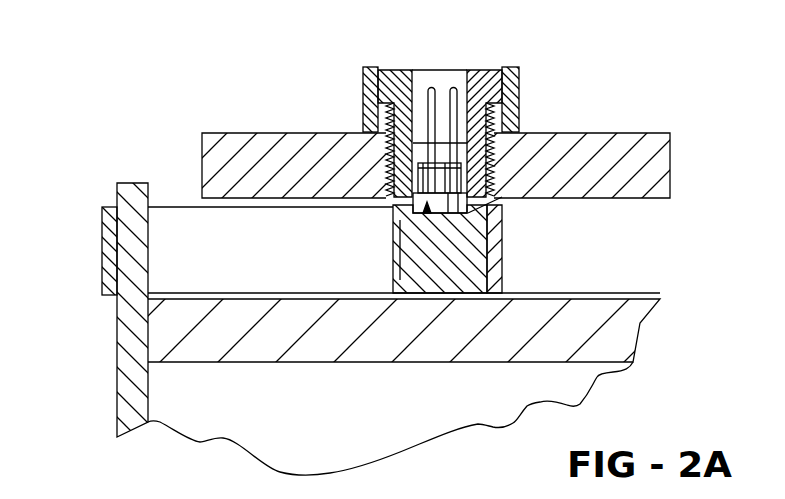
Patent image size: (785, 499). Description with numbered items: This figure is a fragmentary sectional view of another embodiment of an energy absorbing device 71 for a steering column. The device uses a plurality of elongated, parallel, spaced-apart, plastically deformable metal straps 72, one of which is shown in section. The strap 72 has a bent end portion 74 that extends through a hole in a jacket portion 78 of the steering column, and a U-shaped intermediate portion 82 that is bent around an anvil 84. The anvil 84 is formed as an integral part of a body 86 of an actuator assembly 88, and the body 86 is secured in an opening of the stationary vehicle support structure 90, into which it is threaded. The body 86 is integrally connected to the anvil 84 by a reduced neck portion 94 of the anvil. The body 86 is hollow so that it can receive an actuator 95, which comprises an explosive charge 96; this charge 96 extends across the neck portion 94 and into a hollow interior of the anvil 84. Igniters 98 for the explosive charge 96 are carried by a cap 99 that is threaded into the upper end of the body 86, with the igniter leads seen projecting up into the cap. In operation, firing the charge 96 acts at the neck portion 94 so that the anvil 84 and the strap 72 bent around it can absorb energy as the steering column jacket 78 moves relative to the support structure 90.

The energy absorbing device 71 is at (527, 114).
The metal strap 72 is at (183, 217).
The bent end portion 74 is at (102, 267).
The jacket portion 78 is at (117, 387).
The U-shaped intermediate portion 82 is at (502, 265).
The anvil 84 is at (427, 213).
The body 86 is at (345, 133).
The actuator assembly 88 is at (506, 163).
The stationary vehicle support structure 90 is at (665, 148).
The reduced neck portion 94 is at (412, 208).
The actuator 95 is at (410, 254).
The explosive charge 96 is at (457, 233).
The igniter 98 is at (412, 180).
The cap 99 is at (388, 70).